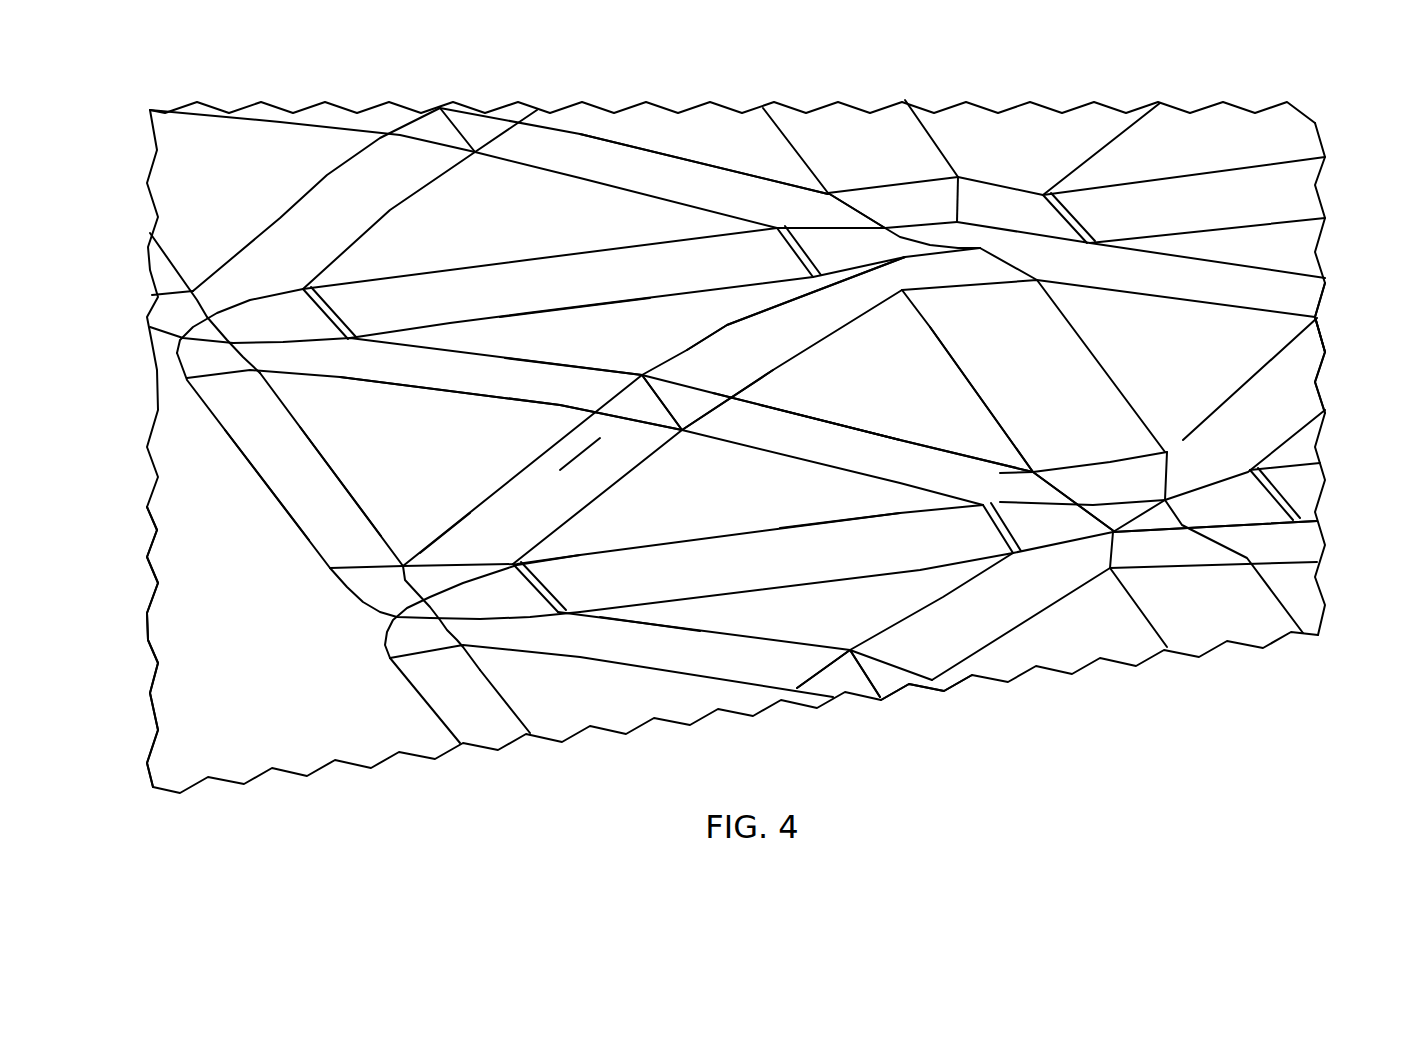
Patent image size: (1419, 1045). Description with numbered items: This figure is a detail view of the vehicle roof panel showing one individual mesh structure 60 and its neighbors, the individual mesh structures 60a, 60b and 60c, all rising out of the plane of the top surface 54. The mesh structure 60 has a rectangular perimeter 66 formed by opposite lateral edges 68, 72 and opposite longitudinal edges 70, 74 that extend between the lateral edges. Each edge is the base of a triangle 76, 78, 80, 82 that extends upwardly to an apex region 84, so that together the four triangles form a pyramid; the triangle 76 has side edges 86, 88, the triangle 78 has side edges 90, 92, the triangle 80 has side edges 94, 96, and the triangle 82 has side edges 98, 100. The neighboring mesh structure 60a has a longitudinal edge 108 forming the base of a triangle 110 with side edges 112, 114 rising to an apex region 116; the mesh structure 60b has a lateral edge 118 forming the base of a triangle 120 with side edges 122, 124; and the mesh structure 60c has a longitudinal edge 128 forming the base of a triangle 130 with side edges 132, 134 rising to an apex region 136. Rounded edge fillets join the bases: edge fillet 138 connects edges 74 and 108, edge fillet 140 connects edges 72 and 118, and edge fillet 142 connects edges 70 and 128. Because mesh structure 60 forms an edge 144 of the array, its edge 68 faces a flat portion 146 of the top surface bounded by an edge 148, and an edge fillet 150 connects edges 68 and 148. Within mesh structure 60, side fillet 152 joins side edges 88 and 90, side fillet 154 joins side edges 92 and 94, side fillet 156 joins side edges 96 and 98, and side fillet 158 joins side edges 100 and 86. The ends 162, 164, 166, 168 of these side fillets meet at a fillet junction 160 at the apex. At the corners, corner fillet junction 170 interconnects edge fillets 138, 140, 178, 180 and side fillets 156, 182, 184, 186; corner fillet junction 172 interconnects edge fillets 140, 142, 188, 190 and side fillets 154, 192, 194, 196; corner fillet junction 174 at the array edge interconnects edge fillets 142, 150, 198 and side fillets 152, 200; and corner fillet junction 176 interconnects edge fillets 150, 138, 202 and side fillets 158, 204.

The top surface 54 is at (305, 745).
The individual mesh structure 60 is at (187, 554).
The individual mesh structure 60a is at (139, 198).
The individual mesh structure 60b is at (1340, 312).
The individual mesh structure 60c is at (909, 730).
The rectangular perimeter 66 is at (327, 604).
The lateral edge 68 is at (305, 438).
The longitudinal edge 70 is at (790, 605).
The lateral edge 72 is at (1012, 438).
The longitudinal edge 74 is at (567, 307).
The triangle 76 is at (365, 496).
The triangle 78 is at (835, 515).
The triangle 80 is at (940, 368).
The triangle 82 is at (613, 320).
The apex region 84 is at (677, 447).
The side edge 86 is at (428, 390).
The side edge 88 is at (435, 537).
The side edge 90 is at (568, 514).
The side edge 92 is at (810, 465).
The side edge 94 is at (853, 418).
The side edge 96 is at (840, 337).
The side edge 98 is at (727, 300).
The side edge 100 is at (505, 355).
The longitudinal edge 108 is at (430, 270).
The triangle 110 is at (560, 190).
The side edge 112 is at (397, 210).
The side edge 114 is at (660, 192).
The apex region 116 is at (476, 97).
The lateral edge 118 is at (1180, 437).
The triangle 120 is at (1320, 348).
The side edge 122 is at (1223, 302).
The side edge 124 is at (1222, 402).
The longitudinal edge 128 is at (767, 590).
The triangle 130 is at (870, 630).
The side edge 132 is at (945, 597).
The side edge 134 is at (640, 630).
The apex region 136 is at (854, 715).
The edge fillet 138 is at (462, 290).
The edge fillet 140 is at (1085, 357).
The edge fillet 142 is at (688, 552).
The edge of the array 144 is at (187, 684).
The flat portion 146 is at (186, 644).
The edge 148 is at (258, 481).
The edge fillet 150 is at (322, 466).
The side fillet 152 is at (477, 510).
The side fillet 154 is at (905, 442).
The side fillet 156 is at (780, 302).
The side fillet 158 is at (500, 388).
The fillet junction 160 is at (648, 363).
The end of side fillet 162 is at (615, 421).
The end of side fillet 164 is at (715, 420).
The end of side fillet 166 is at (710, 388).
The end of side fillet 168 is at (610, 392).
The corner fillet junction 170 is at (966, 128).
The corner fillet junction 172 is at (1182, 553).
The corner fillet junction 174 is at (355, 629).
The corner fillet junction 176 is at (202, 291).
The edge fillet 178 is at (843, 120).
The edge fillet 180 is at (1217, 187).
The side fillet 182 is at (740, 193).
The side fillet 184 is at (1088, 128).
The side fillet 186 is at (1150, 262).
The edge fillet 188 is at (1308, 491).
The edge fillet 190 is at (1205, 633).
The side fillet 192 is at (1313, 386).
The side fillet 194 is at (1310, 553).
The side fillet 196 is at (1077, 580).
The edge fillet 198 is at (485, 724).
The side fillet 200 is at (683, 660).
The edge fillet 202 is at (152, 276).
The side fillet 204 is at (297, 222).